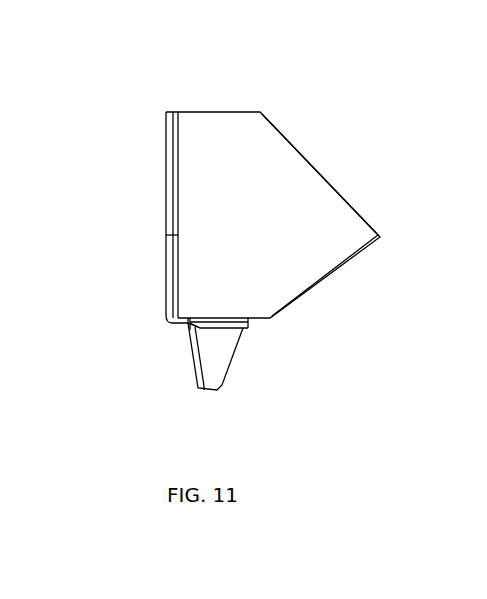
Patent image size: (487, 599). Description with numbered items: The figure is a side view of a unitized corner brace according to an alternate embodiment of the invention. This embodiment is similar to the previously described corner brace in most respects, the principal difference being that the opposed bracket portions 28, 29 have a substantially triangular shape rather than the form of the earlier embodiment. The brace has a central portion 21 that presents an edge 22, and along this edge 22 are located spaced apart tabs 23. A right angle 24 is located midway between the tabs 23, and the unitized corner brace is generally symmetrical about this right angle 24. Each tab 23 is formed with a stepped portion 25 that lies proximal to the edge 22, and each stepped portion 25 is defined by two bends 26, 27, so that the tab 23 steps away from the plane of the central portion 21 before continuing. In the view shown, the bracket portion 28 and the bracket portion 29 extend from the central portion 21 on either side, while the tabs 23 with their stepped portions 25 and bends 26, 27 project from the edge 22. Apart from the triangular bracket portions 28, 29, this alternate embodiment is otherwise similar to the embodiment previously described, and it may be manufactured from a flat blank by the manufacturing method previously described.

The central portion 21 is at (222, 133).
The edge 22 is at (248, 319).
The tabs 23 is at (240, 390).
The right angle 24 is at (178, 125).
The stepped portion 25 is at (248, 324).
The bend 26 is at (248, 322).
The bend 27 is at (248, 326).
The bracket portion 28 is at (168, 183).
The bracket portion 29 is at (281, 178).